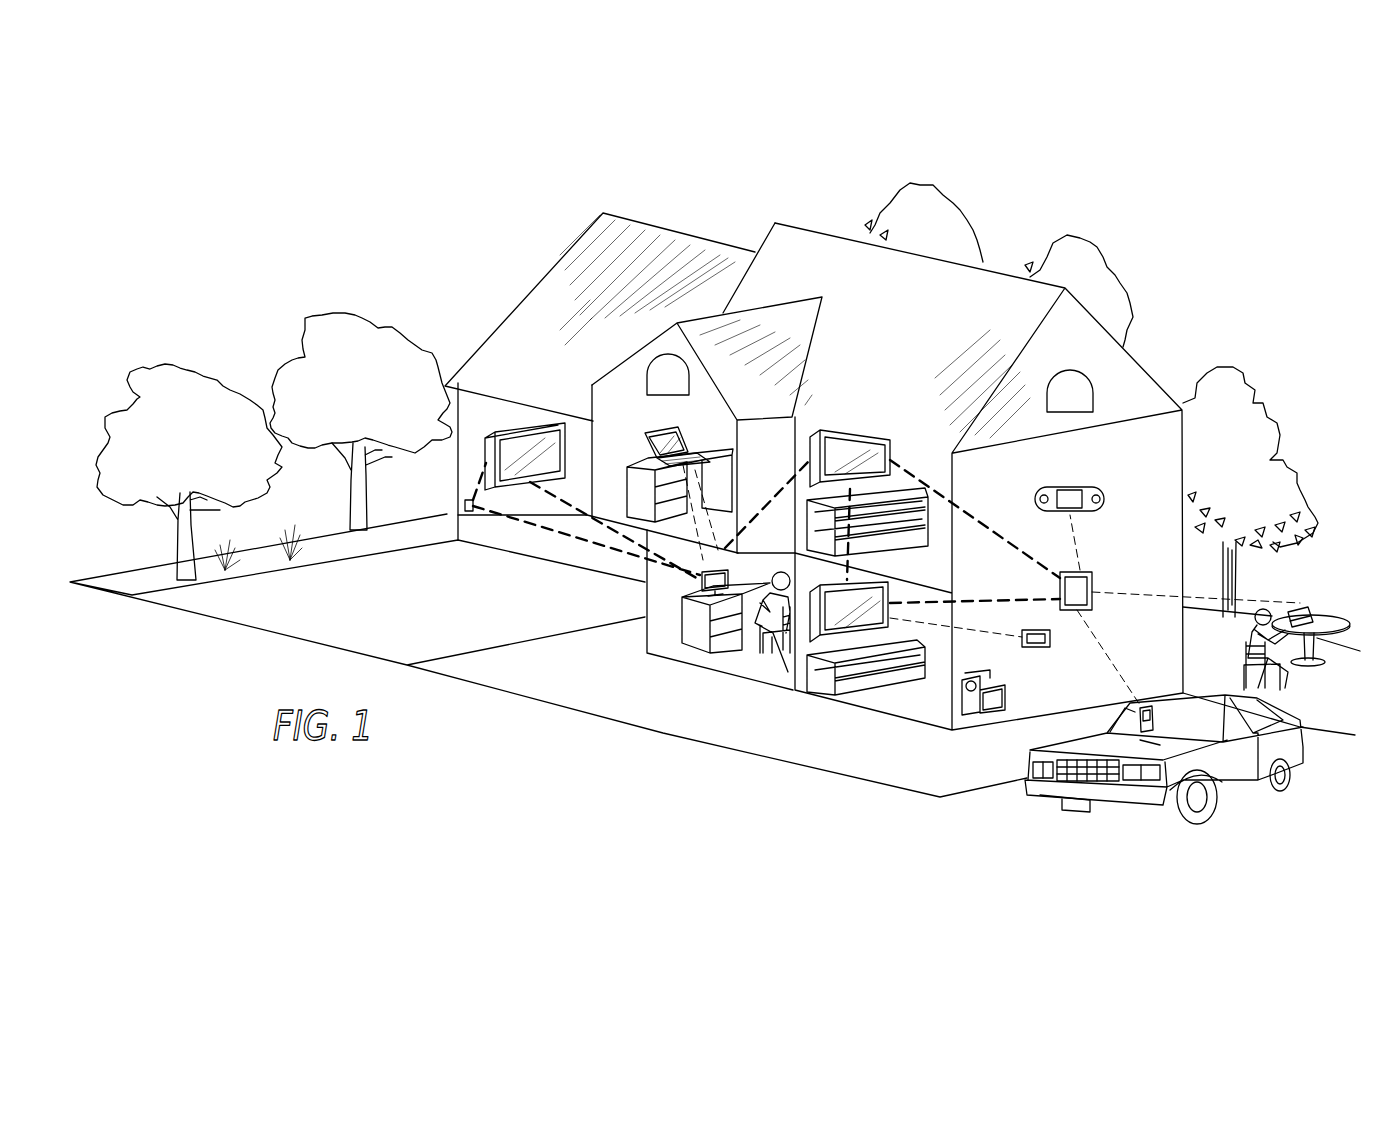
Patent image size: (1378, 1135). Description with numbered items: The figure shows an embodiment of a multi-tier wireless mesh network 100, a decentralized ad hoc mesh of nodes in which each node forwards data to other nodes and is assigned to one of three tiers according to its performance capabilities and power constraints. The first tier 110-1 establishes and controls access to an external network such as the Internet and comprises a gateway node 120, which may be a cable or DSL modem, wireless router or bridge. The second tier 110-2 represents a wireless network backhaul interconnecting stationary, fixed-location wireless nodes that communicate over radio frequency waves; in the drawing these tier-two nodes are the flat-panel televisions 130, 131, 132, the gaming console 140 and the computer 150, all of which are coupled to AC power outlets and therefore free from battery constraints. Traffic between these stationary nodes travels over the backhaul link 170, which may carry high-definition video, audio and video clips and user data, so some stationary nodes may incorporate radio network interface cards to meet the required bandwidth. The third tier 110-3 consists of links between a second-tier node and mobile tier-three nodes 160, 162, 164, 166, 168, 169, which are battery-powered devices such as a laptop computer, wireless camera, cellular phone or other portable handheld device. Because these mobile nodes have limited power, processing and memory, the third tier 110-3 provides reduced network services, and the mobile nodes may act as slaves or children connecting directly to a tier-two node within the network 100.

The multi-tier wireless mesh network 100 is at (1198, 262).
The first tier 110-1 is at (403, 535).
The second tier 110-2 is at (662, 600).
The third tier 110-3 is at (1047, 683).
The gateway node 120 is at (465, 504).
The flat-panel television 130 is at (512, 430).
The flat-panel television 131 is at (822, 432).
The flat-panel television 132 is at (810, 635).
The gaming console 140 is at (1080, 572).
The computer 150 is at (713, 570).
The mobile tier-3 node 160 is at (645, 457).
The mobile tier-3 node 162 is at (985, 717).
The mobile tier-3 node 164 is at (1080, 487).
The mobile tier-3 node 166 is at (1302, 610).
The mobile tier-3 node 168 is at (1150, 705).
The mobile tier-3 node 169 is at (1038, 630).
The backhaul link 170 is at (568, 538).